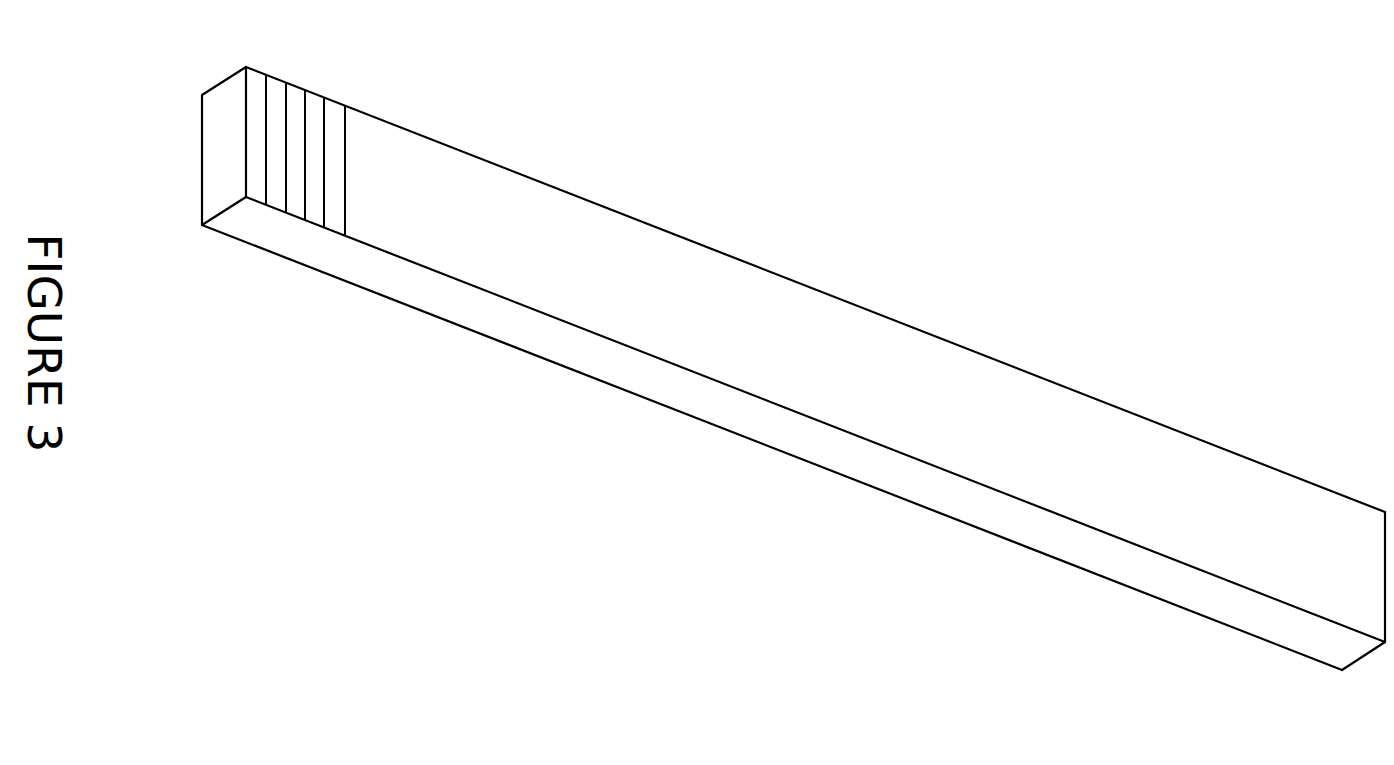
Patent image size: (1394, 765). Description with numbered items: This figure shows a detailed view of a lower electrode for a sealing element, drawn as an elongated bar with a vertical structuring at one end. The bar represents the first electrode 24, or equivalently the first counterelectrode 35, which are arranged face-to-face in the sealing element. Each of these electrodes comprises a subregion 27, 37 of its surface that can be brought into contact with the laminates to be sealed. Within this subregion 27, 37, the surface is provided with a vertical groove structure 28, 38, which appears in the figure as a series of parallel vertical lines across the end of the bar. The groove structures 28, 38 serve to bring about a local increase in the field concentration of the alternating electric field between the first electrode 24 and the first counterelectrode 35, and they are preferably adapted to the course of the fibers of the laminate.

The first electrode 24 is at (793, 368).
The first counterelectrode 35 is at (840, 325).
The subregion 27 is at (385, 127).
The subregion 37 is at (316, 119).
The vertical groove structure 28 is at (281, 212).
The vertical groove structure 38 is at (320, 205).